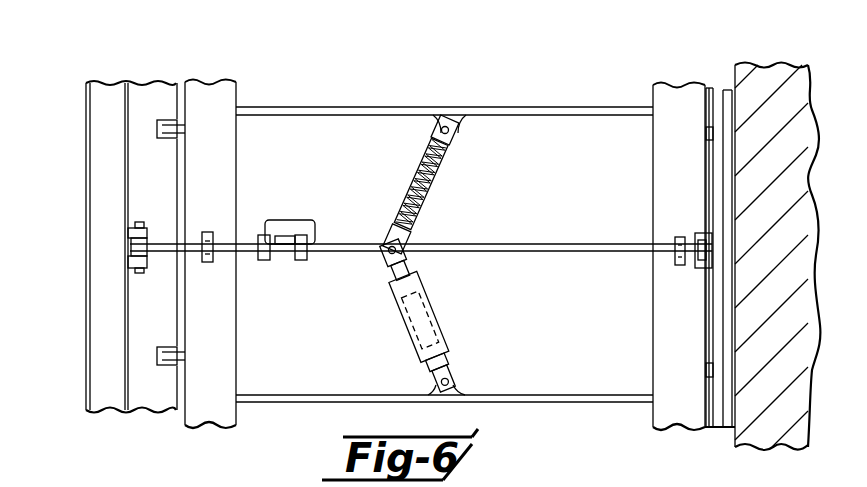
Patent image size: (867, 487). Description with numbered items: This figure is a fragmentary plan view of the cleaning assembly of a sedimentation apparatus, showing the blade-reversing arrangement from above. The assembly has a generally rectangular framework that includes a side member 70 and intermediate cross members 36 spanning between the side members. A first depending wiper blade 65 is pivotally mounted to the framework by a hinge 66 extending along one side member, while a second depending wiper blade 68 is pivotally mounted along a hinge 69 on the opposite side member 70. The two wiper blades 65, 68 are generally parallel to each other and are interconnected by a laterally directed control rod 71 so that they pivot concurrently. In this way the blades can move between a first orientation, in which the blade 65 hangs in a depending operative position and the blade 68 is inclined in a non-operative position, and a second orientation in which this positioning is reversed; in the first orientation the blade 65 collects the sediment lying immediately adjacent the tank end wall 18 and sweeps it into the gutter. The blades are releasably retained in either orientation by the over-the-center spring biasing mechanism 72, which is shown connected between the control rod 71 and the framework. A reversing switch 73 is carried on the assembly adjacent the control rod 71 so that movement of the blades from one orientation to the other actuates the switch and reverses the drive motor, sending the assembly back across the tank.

The end wall 18 is at (730, 168).
The intermediate cross members 36 is at (581, 181).
The first depending wiper blade 65 is at (714, 92).
The hinge 66 is at (680, 108).
The second depending wiper blade 68 is at (98, 183).
The hinge 69 is at (168, 346).
The side member 70 is at (222, 90).
The control rod 71 is at (591, 251).
The over-the-center spring biasing mechanism 72 is at (417, 272).
The reversing switch 73 is at (308, 196).